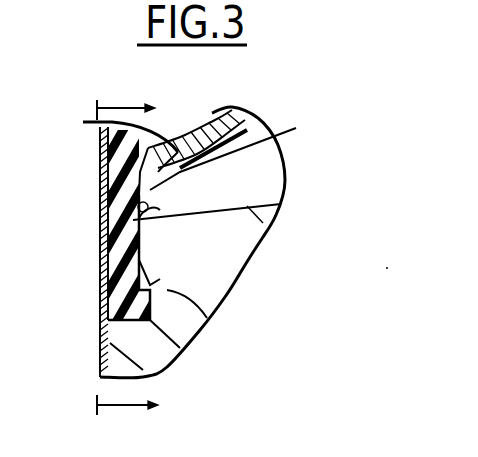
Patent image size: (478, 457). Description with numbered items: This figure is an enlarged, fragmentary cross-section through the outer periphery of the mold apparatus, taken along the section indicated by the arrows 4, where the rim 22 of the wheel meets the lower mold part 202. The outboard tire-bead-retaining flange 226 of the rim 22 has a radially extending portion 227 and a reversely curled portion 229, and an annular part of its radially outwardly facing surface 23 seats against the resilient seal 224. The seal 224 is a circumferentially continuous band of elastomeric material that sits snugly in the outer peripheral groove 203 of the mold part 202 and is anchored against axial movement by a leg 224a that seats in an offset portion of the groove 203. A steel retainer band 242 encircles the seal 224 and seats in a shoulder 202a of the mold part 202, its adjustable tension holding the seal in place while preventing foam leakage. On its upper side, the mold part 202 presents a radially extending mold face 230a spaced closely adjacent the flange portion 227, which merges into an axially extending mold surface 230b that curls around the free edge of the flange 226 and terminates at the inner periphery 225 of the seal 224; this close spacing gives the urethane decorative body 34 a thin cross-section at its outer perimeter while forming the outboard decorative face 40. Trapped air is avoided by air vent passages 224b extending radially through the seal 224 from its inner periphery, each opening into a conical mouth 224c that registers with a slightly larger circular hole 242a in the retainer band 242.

The section line 4- 4 is at (127, 260).
The rim 22 is at (206, 110).
The radially outwardly facing surface 23 is at (98, 170).
The decorative body 34 is at (250, 108).
The outboard decorative face 40 is at (184, 148).
The lower mold part 202 is at (231, 290).
The shoulder 202a is at (100, 350).
The outer peripheral groove 203 is at (207, 318).
The resilient seal 224 is at (100, 277).
The leg 224a is at (180, 348).
The air vent passage 224b is at (100, 193).
The conical mouth 224c is at (100, 215).
The inner periphery 225 is at (230, 293).
The outboard tire-bead-retaining flange 226 is at (150, 220).
The radially extending portion 227 is at (90, 122).
The reversely curled portion 229 is at (150, 178).
The radially extending mold face 230a is at (254, 151).
The axially extending mold surface 230b is at (281, 204).
The retainer band 242 is at (100, 322).
The circular holes 242a is at (100, 225).